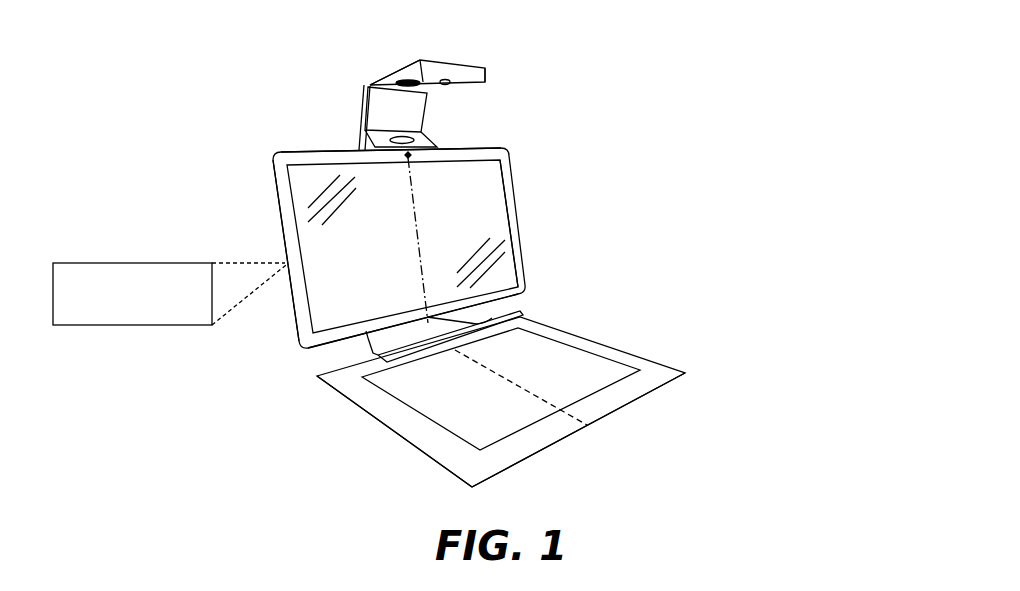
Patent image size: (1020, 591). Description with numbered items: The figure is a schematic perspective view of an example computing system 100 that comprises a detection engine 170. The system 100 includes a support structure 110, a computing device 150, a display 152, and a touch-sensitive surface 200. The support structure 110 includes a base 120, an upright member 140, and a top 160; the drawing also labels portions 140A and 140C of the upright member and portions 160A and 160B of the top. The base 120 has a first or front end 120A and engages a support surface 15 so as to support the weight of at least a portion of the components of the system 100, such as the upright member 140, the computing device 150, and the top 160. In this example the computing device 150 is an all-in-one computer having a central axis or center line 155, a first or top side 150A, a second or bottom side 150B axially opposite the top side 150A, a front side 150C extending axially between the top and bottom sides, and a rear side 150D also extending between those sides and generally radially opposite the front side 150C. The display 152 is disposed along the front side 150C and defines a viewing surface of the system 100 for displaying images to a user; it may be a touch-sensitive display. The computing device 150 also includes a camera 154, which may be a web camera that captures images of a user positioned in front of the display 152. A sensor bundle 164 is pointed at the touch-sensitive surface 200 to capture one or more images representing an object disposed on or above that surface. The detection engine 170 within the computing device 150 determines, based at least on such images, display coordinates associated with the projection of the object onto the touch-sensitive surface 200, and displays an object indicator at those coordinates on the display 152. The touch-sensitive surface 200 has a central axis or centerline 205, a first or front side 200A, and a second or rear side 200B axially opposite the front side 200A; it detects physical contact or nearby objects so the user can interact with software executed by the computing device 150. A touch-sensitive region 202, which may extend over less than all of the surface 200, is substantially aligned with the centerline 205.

The support surface 15 is at (372, 488).
The computing system 100 is at (599, 107).
The support structure 110 is at (271, 127).
The base 120 is at (366, 351).
The front end 120A is at (427, 354).
The upright member 140 is at (364, 120).
The mount top end 140A is at (370, 82).
The mount body 140C is at (418, 105).
The computing device 150 is at (520, 203).
The top side 150A is at (486, 149).
The bottom side 150B is at (500, 303).
The front side 150C is at (509, 245).
The rear side 150D is at (276, 222).
The display 152 is at (343, 230).
The camera 154 is at (408, 155).
The center line 155 is at (420, 233).
The top 160 is at (430, 52).
The camera lens 160A is at (408, 83).
The sensor bundle end 160B is at (489, 66).
The sensor bundle 164 is at (451, 84).
The detection engine 170 is at (130, 325).
The touch-sensitive surface 200 is at (645, 362).
The front side 200A is at (513, 463).
The rear side 200B is at (322, 372).
The touch-sensitive region 202 is at (582, 380).
The centerline 205 is at (500, 375).